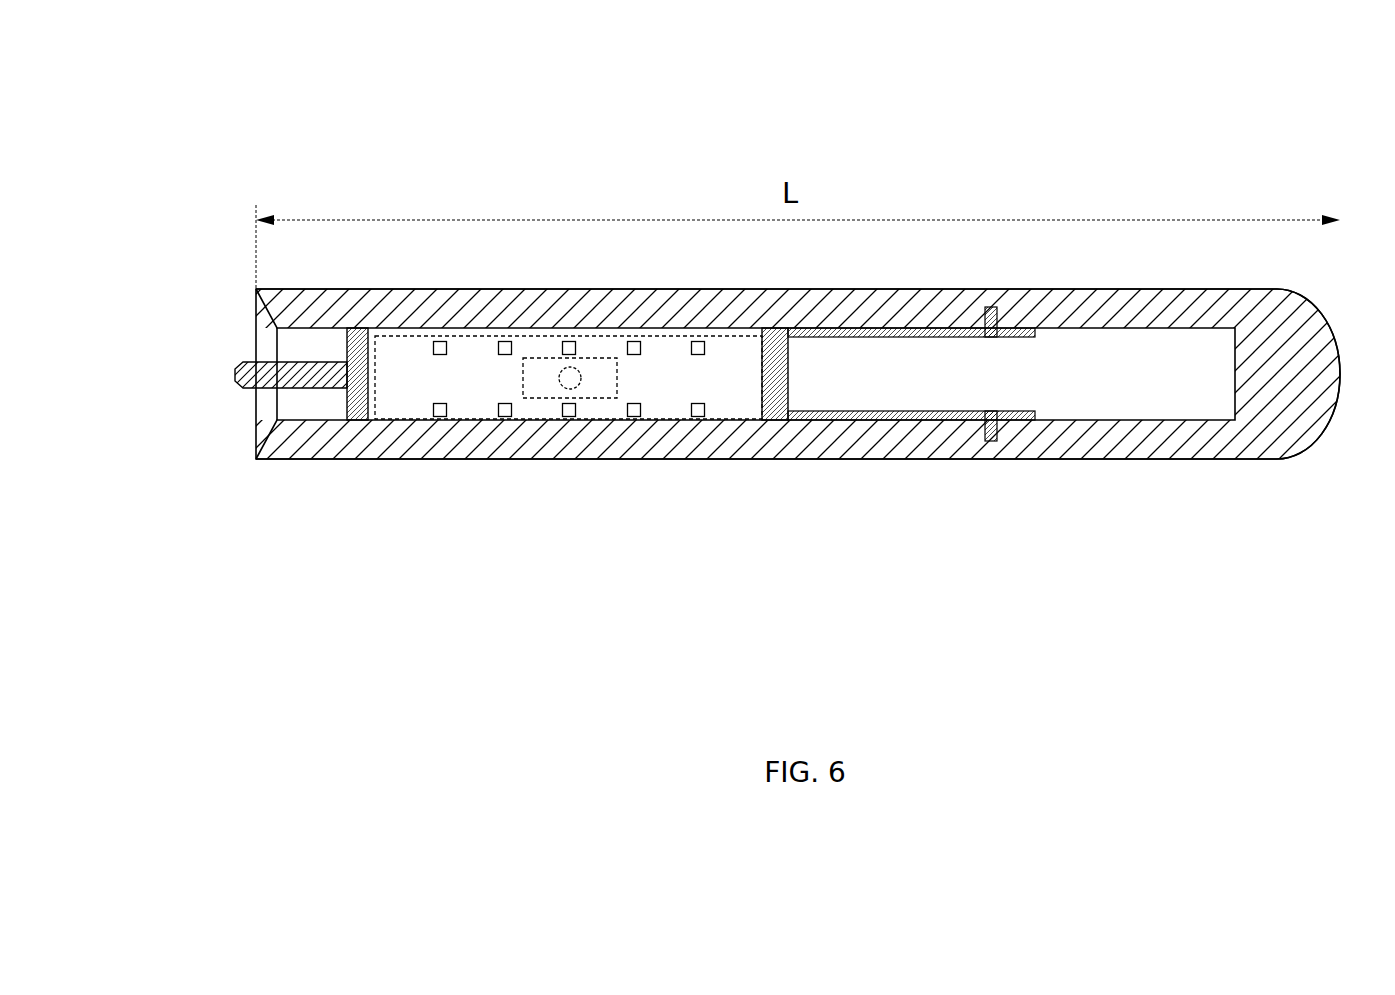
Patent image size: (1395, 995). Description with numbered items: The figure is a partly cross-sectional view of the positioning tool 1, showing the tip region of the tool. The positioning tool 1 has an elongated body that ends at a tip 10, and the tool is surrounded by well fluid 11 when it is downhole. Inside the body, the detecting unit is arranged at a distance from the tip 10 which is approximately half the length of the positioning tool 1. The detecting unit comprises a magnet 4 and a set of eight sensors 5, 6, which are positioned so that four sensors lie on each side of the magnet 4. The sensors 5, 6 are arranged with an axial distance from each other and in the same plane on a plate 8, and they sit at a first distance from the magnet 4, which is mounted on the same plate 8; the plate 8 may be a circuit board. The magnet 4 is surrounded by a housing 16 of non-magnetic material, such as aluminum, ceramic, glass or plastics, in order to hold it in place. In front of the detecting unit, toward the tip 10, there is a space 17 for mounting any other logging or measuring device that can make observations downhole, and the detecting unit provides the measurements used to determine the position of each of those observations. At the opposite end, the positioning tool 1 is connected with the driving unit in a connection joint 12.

The positioning tool 1 is at (557, 186).
The magnet 4 is at (562, 385).
The sensor 5 is at (704, 418).
The sensor 6 is at (642, 417).
The plate 8 is at (462, 403).
The tip 10 is at (1340, 205).
The well fluid 11 is at (814, 264).
The connection joint 12 is at (297, 393).
The housing 16 is at (595, 382).
The space 17 is at (1063, 380).